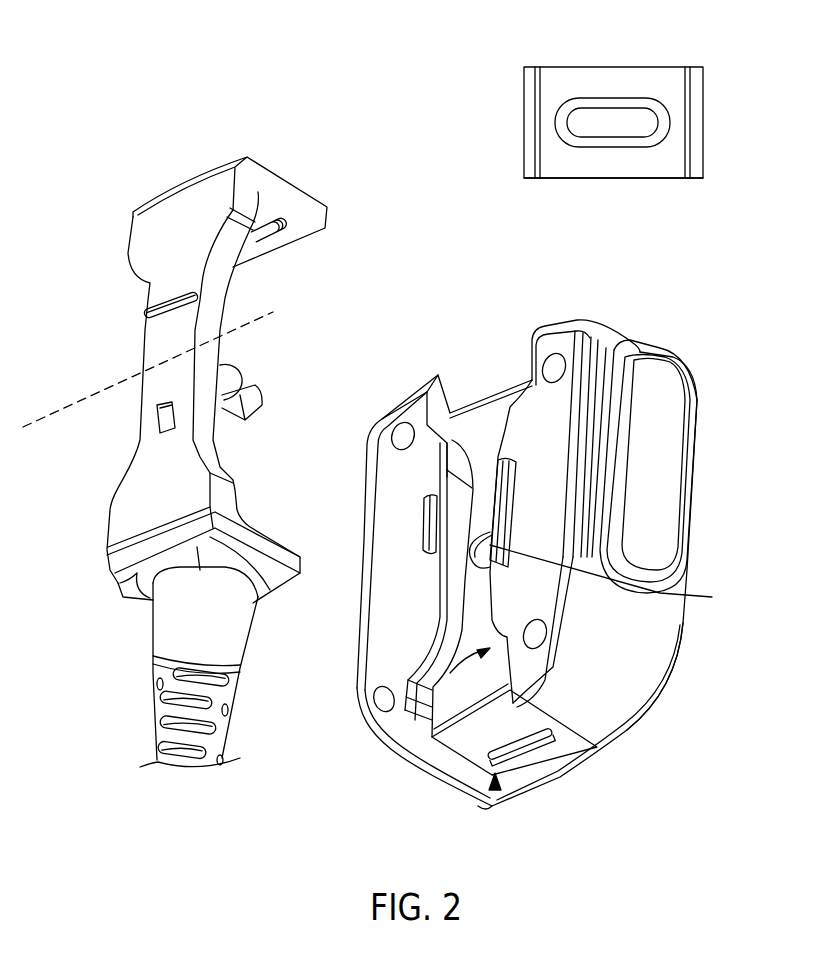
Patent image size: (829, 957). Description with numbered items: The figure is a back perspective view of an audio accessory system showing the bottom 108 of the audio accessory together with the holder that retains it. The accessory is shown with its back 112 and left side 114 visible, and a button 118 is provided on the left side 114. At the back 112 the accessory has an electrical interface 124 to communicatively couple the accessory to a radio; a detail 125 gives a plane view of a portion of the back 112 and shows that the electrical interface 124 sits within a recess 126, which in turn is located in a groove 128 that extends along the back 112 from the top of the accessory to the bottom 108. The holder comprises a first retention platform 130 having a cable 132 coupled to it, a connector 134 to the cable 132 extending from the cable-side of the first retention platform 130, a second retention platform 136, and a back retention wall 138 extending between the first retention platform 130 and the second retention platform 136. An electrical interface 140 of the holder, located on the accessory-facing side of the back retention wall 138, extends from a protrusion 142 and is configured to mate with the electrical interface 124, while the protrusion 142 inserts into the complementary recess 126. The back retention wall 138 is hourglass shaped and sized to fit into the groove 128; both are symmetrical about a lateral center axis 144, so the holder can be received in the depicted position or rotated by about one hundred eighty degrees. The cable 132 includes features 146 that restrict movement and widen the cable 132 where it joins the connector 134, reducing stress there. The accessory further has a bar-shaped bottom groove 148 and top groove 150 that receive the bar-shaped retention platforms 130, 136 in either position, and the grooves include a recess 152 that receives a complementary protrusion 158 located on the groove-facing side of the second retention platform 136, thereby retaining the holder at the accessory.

The bottom 108 is at (610, 733).
The back 112 is at (530, 145).
The left side 114 is at (670, 623).
The button 118 is at (675, 505).
The electrical interface 124 is at (552, 125).
The detail 125 is at (604, 67).
The recess 126 is at (670, 100).
The groove 128 is at (613, 178).
The first retention platform 130 is at (130, 585).
The cable 132 is at (160, 703).
The connector 134 is at (152, 640).
The second retention platform 136 is at (285, 180).
The back retention wall 138 is at (147, 485).
The electrical interface 140 is at (252, 415).
The protrusion 142 is at (233, 370).
The lateral center axis 144 is at (58, 410).
The features 146 is at (160, 725).
The bottom groove 148 is at (496, 790).
The top groove 150 is at (466, 377).
The recess 152 is at (543, 740).
The protrusion 158 is at (270, 240).